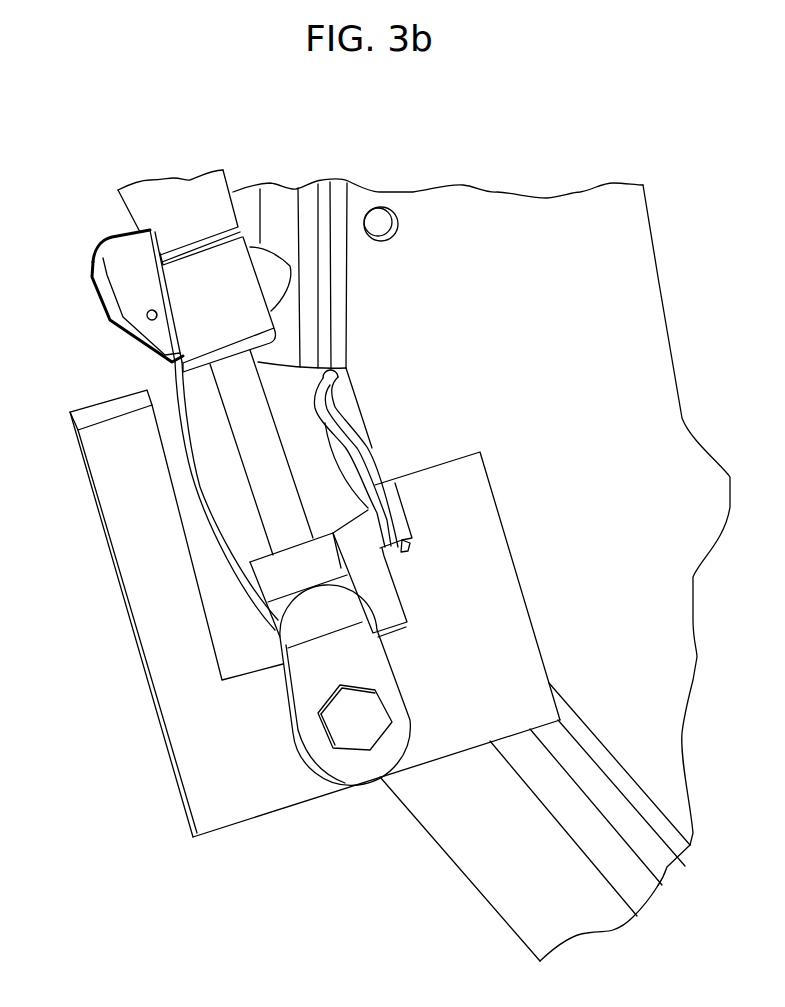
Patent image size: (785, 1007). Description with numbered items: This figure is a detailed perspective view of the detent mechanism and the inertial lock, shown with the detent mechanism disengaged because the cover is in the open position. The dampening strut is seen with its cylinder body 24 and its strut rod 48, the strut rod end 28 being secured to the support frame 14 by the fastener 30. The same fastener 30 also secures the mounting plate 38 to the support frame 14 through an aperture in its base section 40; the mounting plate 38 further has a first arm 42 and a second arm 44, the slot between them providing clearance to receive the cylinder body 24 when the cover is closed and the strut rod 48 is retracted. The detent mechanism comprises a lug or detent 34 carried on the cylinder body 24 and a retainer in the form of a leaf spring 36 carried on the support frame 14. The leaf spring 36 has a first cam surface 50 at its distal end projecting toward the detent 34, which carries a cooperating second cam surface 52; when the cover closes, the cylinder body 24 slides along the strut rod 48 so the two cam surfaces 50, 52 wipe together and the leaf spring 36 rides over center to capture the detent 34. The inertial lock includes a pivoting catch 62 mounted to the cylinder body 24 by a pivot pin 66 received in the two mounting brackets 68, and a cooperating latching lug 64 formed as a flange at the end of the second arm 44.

The support frame 14 is at (590, 890).
The cylinder body 24 is at (153, 197).
The strut rod end 28 is at (307, 692).
The fastener 30 is at (353, 727).
The detent 34 is at (268, 260).
The leaf spring 36 is at (372, 448).
The mounting plate 38 is at (146, 835).
The base section 40 is at (263, 773).
The first arm 42 is at (487, 563).
The second arm 44 is at (150, 570).
The strut rod 48 is at (233, 387).
The first cam surface 50 is at (318, 407).
The second cam surface 52 is at (290, 265).
The pivoting catch 62 is at (97, 272).
The latching lug 64 is at (115, 412).
The pivot pin 66 is at (146, 315).
The mounting brackets 68 is at (118, 248).